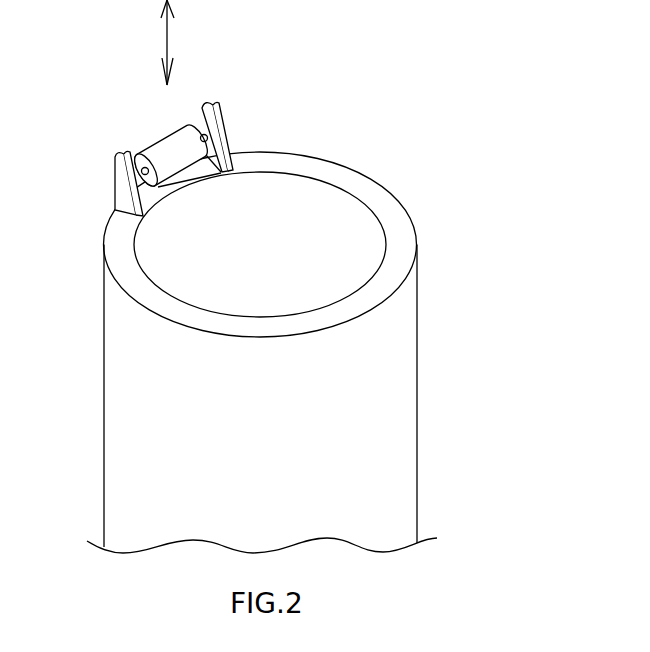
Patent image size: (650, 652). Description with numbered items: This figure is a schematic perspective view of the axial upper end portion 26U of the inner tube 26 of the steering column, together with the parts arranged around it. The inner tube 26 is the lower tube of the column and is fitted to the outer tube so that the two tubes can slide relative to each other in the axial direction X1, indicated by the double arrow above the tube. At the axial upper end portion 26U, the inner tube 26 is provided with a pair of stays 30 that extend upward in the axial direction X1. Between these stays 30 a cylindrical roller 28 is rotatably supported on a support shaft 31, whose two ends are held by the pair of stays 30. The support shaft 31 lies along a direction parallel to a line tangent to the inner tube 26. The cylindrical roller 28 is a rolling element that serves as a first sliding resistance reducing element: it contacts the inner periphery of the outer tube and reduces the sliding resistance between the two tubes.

The inner tube 26 is at (383, 462).
The axial upper end portion 26U is at (375, 314).
The cylindrical roller 28 is at (165, 150).
The stays 30 is at (120, 170).
The support shaft 31 is at (146, 177).
The axial direction X1 is at (168, 37).